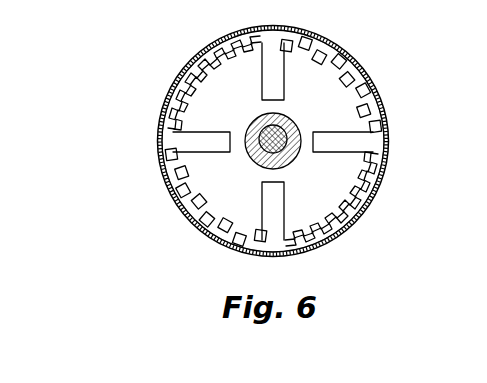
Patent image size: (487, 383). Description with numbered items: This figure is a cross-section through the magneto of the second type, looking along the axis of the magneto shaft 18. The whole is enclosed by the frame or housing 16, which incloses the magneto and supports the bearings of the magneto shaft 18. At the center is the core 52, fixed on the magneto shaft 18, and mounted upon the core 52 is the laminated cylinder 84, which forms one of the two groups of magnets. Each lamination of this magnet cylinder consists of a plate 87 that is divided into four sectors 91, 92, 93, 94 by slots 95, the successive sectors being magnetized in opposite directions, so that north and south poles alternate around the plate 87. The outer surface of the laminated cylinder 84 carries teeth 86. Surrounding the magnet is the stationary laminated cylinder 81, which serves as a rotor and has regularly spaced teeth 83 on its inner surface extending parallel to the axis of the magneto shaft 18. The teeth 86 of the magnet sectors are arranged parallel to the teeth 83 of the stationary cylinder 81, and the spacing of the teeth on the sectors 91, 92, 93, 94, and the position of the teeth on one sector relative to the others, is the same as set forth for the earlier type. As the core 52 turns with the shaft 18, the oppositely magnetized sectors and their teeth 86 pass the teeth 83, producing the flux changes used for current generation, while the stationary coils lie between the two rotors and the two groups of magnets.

The frame or housing 16 is at (335, 49).
The stationary laminated cylinder 81 is at (379, 102).
The teeth 83 is at (356, 78).
The teeth 86 is at (200, 75).
The sector 91 is at (214, 83).
The sector 92 is at (330, 84).
The sector 93 is at (331, 199).
The sector 94 is at (216, 197).
The slot 95 is at (273, 141).
The plate 87 is at (308, 86).
The laminated cylinder 84 is at (307, 177).
The core 52 is at (259, 130).
The magneto shaft 18 is at (282, 134).